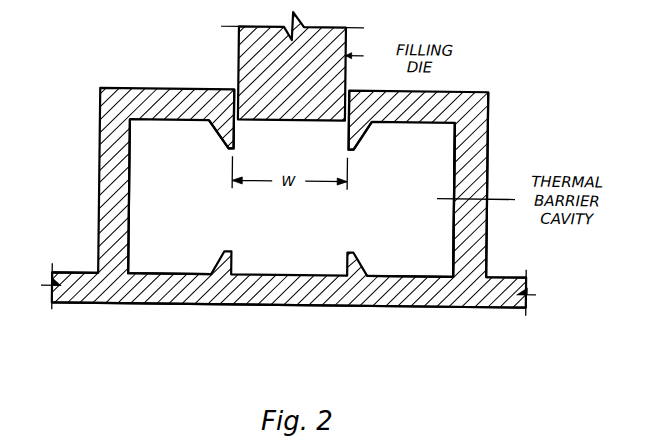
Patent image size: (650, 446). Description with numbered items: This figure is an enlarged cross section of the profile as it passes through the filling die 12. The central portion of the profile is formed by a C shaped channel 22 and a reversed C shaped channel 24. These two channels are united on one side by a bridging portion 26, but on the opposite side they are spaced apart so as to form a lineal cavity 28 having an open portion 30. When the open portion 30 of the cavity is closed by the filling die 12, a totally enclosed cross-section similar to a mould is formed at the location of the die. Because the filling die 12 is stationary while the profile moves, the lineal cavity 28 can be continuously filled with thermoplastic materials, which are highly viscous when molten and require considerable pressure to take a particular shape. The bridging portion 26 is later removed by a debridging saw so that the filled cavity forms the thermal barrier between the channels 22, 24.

The filling die 12 is at (244, 52).
The C shaped channel 22 is at (110, 153).
The reversed C shaped channel 24 is at (473, 142).
The bridging portion 26 is at (290, 305).
The lineal cavity 28 is at (145, 227).
The open portion 30 is at (332, 133).